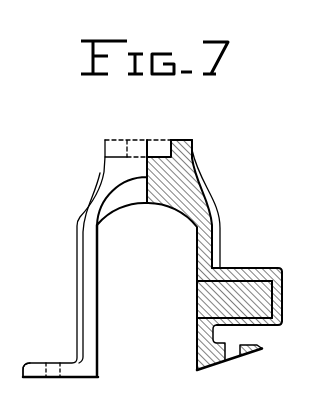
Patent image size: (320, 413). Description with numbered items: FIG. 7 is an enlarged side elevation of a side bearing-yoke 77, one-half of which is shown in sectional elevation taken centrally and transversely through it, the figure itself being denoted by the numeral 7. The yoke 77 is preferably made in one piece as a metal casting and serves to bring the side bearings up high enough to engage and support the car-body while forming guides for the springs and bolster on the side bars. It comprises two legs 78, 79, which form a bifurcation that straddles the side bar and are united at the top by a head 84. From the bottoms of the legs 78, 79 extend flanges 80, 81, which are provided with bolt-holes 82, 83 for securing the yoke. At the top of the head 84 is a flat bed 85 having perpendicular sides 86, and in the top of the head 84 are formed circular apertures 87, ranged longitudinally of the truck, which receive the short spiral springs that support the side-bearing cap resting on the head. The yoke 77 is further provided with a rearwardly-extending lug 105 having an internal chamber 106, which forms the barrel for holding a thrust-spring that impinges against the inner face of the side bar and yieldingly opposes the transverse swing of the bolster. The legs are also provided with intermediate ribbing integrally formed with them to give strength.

The head 84 is at (182, 203).
The circular apertures 87 is at (160, 147).
The perpendicular sides 86 is at (112, 148).
The flat bed 85 is at (193, 141).
The leg 79 is at (208, 249).
The yoke 77 is at (64, 267).
The leg 78 is at (88, 257).
The bolt-hole 82 is at (41, 359).
The flange 80 is at (75, 304).
The internal chamber 106 is at (239, 296).
The rearwardly-extending lug 105 is at (278, 298).
The bolt-hole 83 is at (230, 348).
The flange 81 is at (218, 363).
The figure reference 7 is at (310, 240).